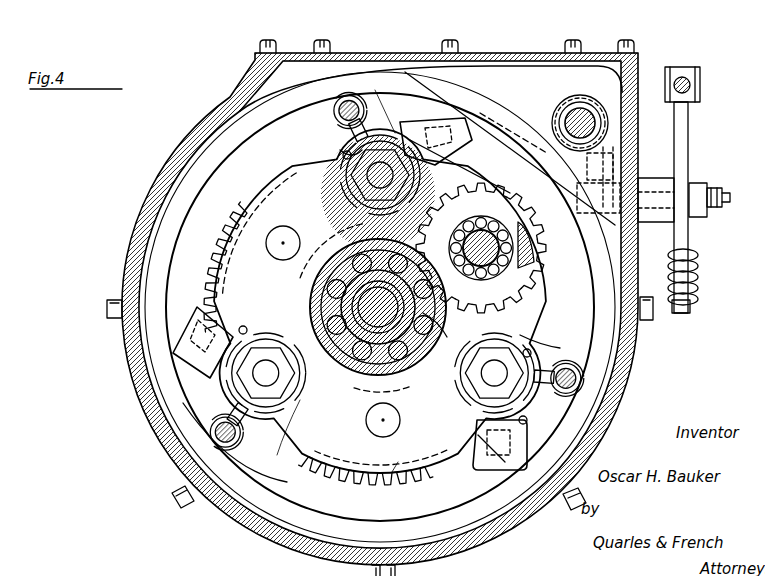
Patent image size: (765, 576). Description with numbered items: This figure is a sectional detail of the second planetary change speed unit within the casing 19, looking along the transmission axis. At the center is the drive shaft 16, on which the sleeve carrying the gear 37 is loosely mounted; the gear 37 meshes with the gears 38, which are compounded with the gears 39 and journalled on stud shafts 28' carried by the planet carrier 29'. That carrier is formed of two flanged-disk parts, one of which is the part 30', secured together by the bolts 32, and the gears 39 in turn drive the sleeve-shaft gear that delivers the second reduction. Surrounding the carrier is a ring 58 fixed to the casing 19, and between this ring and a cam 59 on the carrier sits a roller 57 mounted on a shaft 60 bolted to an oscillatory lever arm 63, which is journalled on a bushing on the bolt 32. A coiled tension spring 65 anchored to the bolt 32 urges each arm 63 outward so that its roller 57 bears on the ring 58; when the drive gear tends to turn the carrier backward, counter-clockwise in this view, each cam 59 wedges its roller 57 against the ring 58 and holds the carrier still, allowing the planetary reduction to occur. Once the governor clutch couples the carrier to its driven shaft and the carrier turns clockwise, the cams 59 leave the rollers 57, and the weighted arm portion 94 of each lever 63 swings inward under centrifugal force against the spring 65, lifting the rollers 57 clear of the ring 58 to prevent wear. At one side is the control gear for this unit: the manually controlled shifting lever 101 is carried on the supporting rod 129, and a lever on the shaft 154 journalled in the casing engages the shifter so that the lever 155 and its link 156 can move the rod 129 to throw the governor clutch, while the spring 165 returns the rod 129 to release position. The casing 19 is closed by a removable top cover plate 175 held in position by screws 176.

The drive shaft 16 is at (372, 378).
The casing 19 is at (640, 398).
The stud shafts 28' is at (380, 301).
The planet carrier 29' is at (349, 476).
The carrier part 30' is at (279, 432).
The bolts 32 is at (367, 175).
The gear 37 is at (441, 322).
The gears 38 is at (222, 232).
The gears 39 is at (534, 255).
The roller 57 is at (353, 153).
The ring 58 is at (368, 78).
The cam 59 is at (345, 132).
The shaft 60 is at (334, 108).
The lever arm 63 is at (408, 160).
The coiled tension spring 65 is at (338, 152).
The weighted arm portion 94 is at (445, 122).
The shifting lever 101 is at (530, 154).
The supporting rod 129 is at (570, 112).
The shaft 154 is at (724, 204).
The lever 155 is at (688, 152).
The link 156 is at (684, 78).
The spring 165 is at (698, 268).
The top cover plate 175 is at (338, 57).
The screws 176 is at (565, 46).